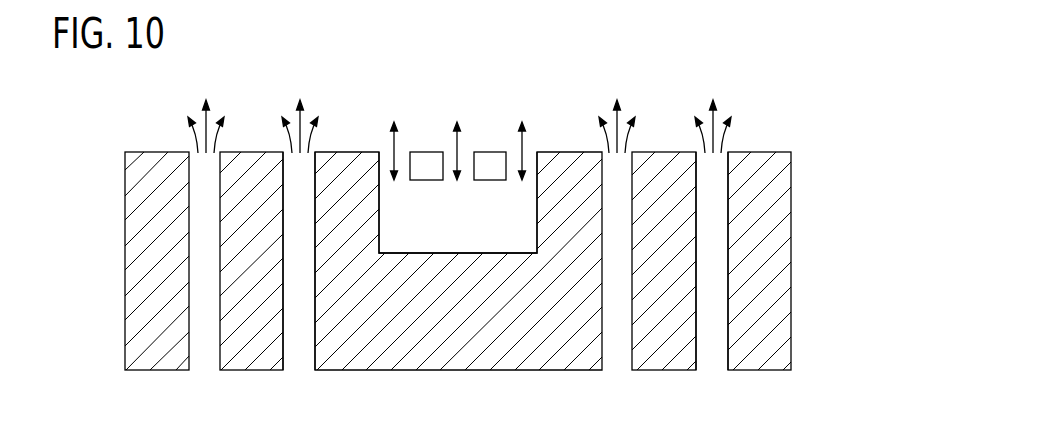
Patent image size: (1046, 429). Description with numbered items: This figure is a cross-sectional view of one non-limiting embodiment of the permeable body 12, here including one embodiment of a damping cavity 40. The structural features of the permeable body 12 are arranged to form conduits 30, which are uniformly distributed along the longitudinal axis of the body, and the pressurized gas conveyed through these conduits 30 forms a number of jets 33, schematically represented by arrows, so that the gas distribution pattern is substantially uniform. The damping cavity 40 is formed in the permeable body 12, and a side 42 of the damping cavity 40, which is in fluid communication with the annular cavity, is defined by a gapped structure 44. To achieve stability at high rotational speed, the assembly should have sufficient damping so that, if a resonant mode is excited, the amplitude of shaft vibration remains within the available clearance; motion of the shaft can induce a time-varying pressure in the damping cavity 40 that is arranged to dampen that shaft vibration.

The permeable body 12 is at (817, 74).
The conduits 30 is at (298, 348).
The jets 33 is at (190, 128).
The damping cavity 40 is at (470, 237).
The side of damping cavity 42 is at (503, 107).
The gapped structure 44 is at (423, 181).